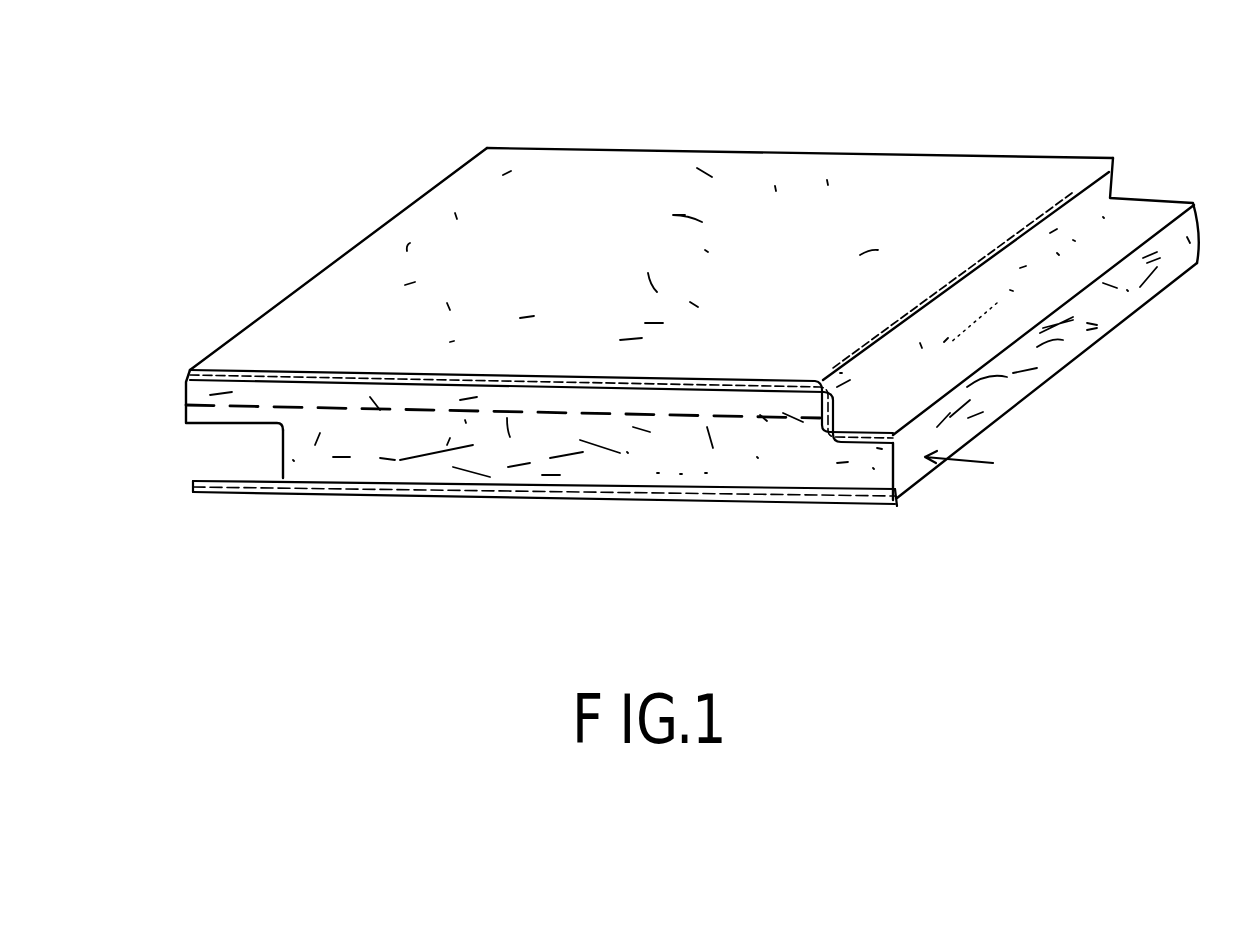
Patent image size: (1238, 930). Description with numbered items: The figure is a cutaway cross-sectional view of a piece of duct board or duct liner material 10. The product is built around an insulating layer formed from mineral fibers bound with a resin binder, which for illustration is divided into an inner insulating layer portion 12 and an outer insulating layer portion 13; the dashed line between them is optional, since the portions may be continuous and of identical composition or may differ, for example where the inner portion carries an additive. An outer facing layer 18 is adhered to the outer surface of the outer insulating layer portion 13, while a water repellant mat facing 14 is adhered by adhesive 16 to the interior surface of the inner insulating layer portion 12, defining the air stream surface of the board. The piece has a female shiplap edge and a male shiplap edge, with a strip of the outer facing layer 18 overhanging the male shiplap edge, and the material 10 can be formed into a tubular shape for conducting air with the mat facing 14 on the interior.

The duct board or duct liner material 10 is at (612, 610).
The inner insulating layer portion 12 is at (343, 397).
The outer insulating layer portion 13 is at (817, 472).
The water repellant mat facing 14 is at (922, 124).
The adhesive 16 is at (193, 378).
The outer facing layer 18 is at (297, 497).